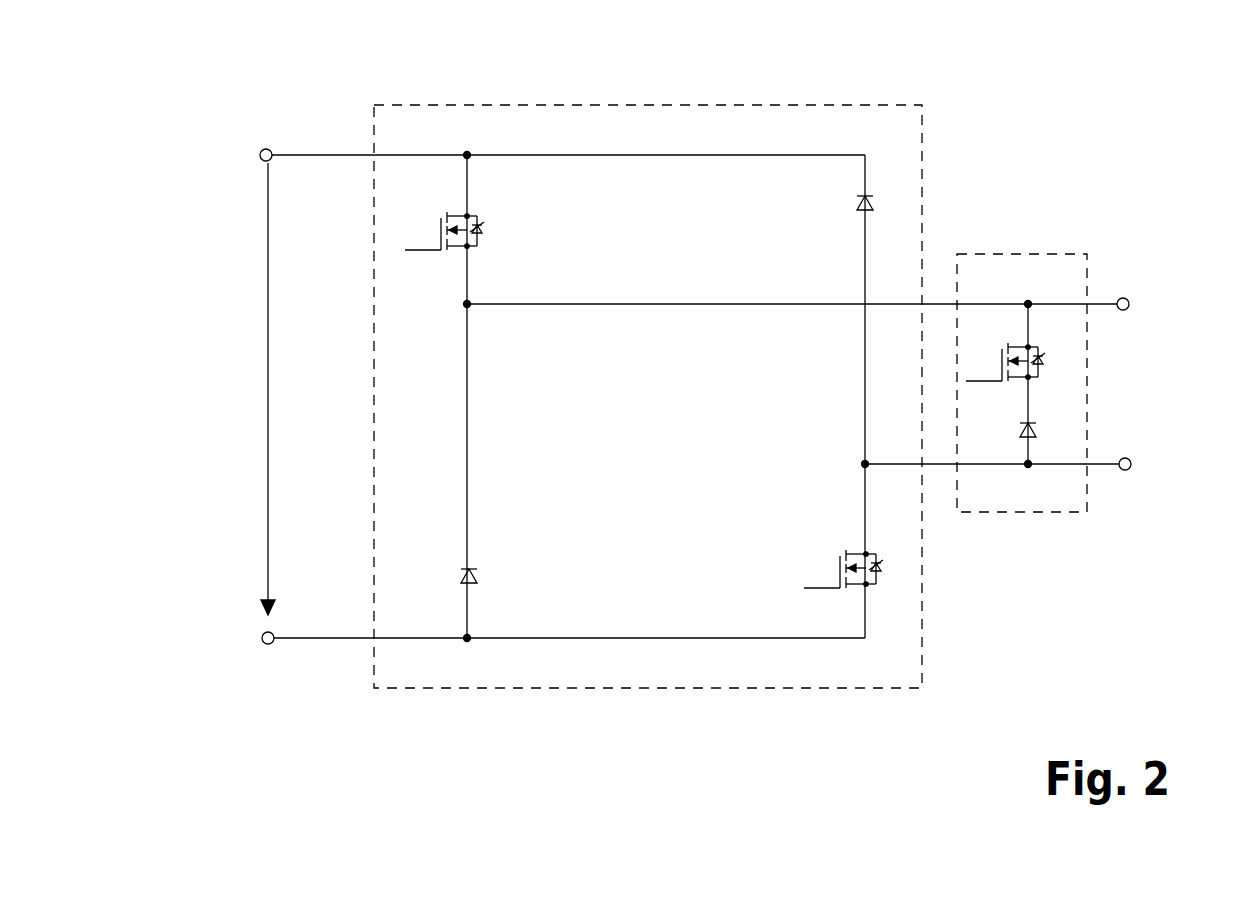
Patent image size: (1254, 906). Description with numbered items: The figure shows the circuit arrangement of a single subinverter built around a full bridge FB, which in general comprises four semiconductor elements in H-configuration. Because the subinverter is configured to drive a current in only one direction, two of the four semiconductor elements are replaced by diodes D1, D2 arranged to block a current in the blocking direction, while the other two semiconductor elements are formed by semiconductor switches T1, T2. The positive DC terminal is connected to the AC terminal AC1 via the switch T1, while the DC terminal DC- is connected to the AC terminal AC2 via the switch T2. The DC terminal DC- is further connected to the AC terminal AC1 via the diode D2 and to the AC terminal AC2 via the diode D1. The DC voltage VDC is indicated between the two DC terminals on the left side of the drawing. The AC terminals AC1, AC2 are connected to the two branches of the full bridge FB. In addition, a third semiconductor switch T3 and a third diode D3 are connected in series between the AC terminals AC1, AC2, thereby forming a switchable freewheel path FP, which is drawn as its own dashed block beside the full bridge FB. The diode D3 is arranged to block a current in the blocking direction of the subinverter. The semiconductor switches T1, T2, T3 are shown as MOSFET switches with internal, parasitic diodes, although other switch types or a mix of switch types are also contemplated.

The full bridge FB is at (900, 97).
The freewheel path FP is at (1082, 240).
The semiconductor switch T1 is at (443, 231).
The semiconductor switch T2 is at (841, 569).
The third semiconductor switch T3 is at (1004, 363).
The diode D1 is at (843, 203).
The diode D2 is at (447, 577).
The third diode D3 is at (1010, 430).
The DC terminal DC- is at (535, 638).
The DC voltage VDC is at (230, 389).
The AC terminal AC1 is at (828, 306).
The AC terminal AC2 is at (1027, 466).